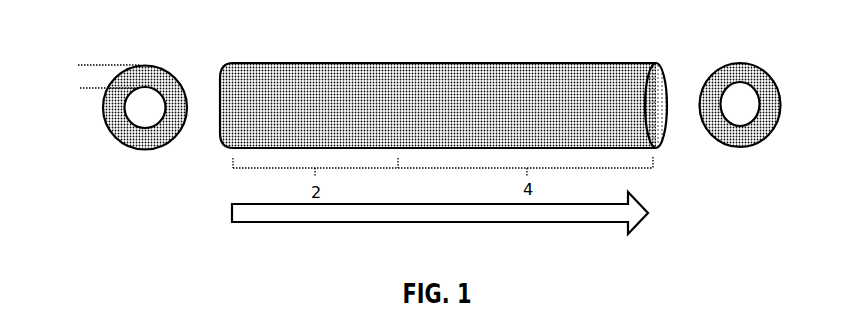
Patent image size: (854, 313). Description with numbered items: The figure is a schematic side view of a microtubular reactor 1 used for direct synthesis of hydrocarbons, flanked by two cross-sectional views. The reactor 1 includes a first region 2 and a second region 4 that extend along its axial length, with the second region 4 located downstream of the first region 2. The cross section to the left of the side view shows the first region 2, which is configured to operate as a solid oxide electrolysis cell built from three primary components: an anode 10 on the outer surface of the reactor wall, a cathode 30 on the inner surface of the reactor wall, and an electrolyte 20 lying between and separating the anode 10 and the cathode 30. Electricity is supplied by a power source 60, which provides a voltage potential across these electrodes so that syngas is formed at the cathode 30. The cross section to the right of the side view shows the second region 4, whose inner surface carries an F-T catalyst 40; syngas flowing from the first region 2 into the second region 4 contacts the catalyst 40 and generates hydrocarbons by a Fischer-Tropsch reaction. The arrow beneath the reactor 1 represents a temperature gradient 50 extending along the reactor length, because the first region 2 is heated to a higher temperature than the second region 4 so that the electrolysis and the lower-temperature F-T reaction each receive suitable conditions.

The microtubular reactor 1 is at (291, 62).
The first region 2 is at (150, 65).
The second region 4 is at (763, 71).
The anode 10 is at (120, 141).
The electrolyte 20 is at (152, 78).
The cathode 30 is at (160, 130).
The F-T catalyst 40 is at (762, 135).
The temperature gradient 50 is at (300, 224).
The power source 60 is at (81, 78).